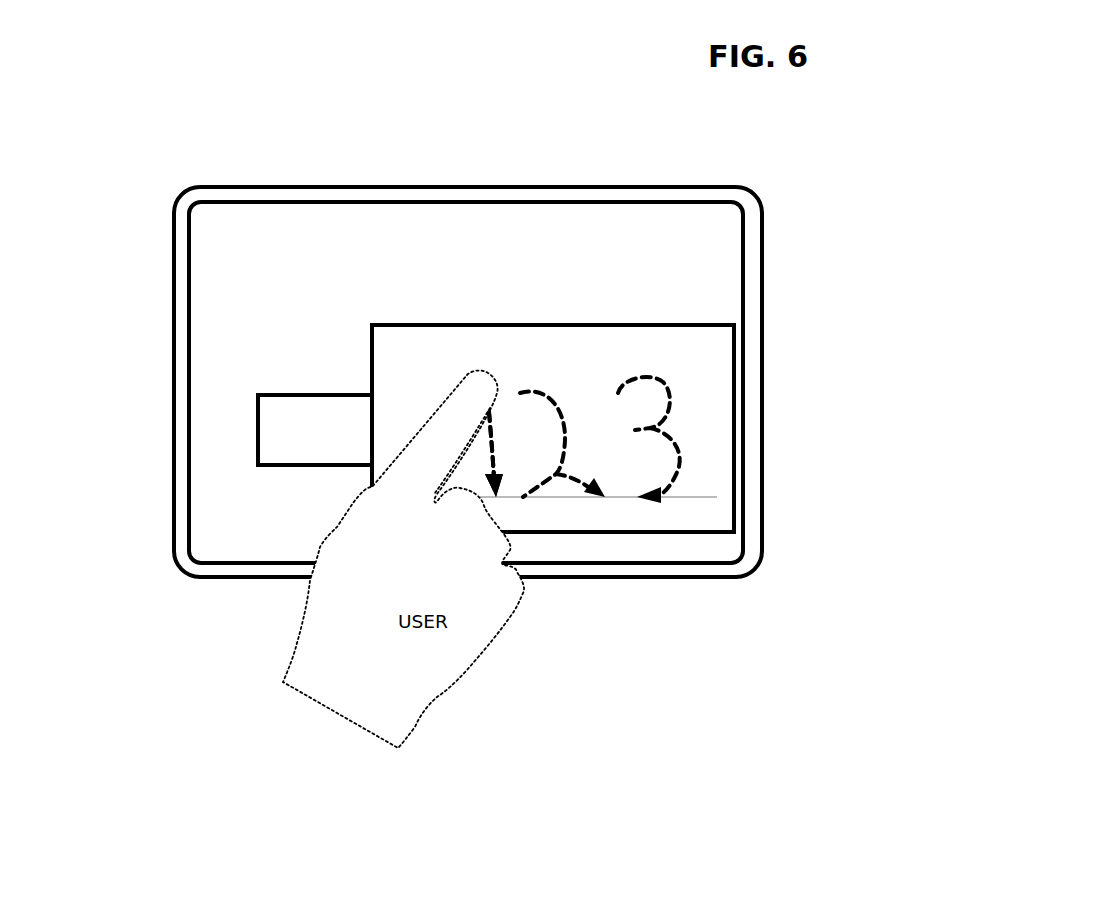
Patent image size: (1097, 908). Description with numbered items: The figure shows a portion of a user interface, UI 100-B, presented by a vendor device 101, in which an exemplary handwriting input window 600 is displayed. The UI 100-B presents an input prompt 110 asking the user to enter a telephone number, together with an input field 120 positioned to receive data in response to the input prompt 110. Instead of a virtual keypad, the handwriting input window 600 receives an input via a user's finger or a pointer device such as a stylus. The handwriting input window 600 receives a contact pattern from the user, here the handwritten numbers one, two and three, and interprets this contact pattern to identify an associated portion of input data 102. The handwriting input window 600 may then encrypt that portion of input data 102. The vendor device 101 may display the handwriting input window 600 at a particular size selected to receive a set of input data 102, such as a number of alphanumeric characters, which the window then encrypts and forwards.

The user interface 100-B is at (247, 222).
The vendor device 101 is at (173, 260).
The input prompt 110 is at (342, 300).
The input field 120 is at (243, 410).
The handwriting input window 600 is at (636, 325).
The input data 102 is at (716, 396).